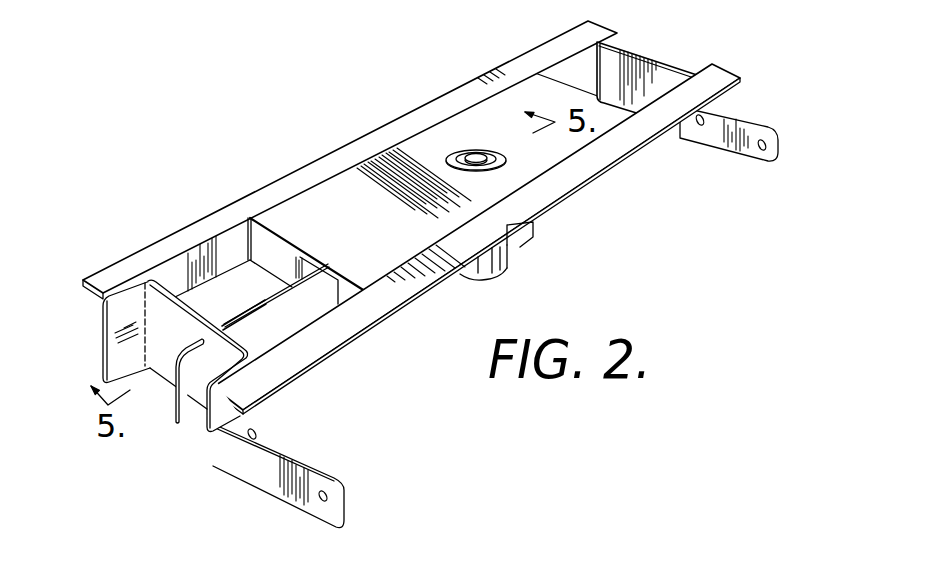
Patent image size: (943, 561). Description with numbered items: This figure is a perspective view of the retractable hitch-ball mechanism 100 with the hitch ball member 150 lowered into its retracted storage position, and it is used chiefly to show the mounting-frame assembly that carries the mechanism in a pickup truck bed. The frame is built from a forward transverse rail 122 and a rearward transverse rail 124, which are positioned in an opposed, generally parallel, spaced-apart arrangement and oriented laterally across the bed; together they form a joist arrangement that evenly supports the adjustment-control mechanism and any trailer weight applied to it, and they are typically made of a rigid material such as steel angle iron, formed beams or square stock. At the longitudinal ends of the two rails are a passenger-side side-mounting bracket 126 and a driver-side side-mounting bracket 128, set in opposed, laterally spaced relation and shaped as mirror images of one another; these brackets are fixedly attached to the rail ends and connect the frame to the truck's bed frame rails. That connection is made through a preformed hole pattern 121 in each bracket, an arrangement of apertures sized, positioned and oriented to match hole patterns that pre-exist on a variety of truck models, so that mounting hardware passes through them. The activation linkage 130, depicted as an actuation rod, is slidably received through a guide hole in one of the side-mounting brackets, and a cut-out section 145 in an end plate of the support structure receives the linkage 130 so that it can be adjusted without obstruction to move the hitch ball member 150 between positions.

The retractable hitch-ball mechanism 100 is at (409, 278).
The preformed hole pattern 121 is at (322, 534).
The forward transverse rail 122 is at (342, 151).
The rearward transverse rail 124 is at (723, 76).
The passenger-side side-mounting bracket 126 is at (665, 64).
The driver-side side-mounting bracket 128 is at (101, 345).
The activation linkage 130 is at (249, 301).
The cut-out section 145 is at (320, 301).
The hitch ball member 150 is at (477, 156).